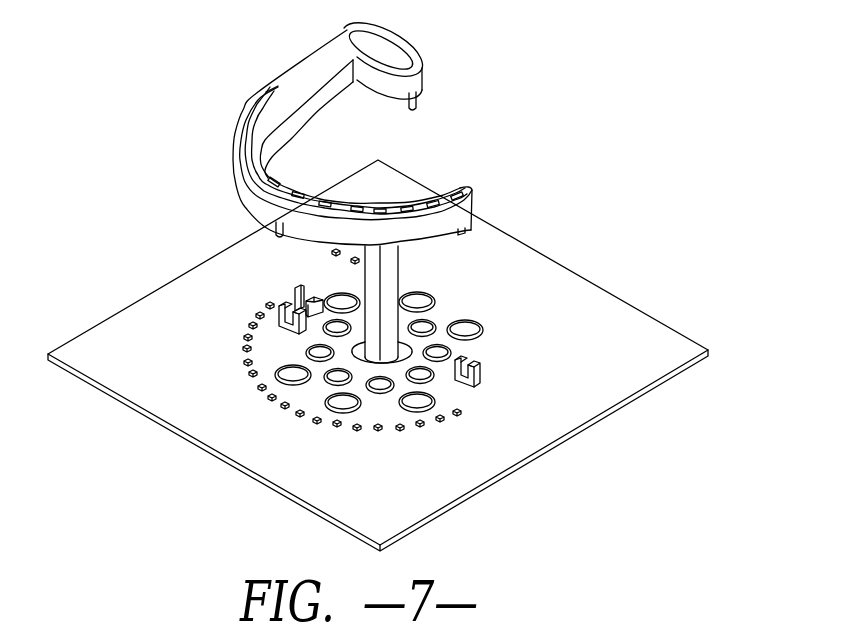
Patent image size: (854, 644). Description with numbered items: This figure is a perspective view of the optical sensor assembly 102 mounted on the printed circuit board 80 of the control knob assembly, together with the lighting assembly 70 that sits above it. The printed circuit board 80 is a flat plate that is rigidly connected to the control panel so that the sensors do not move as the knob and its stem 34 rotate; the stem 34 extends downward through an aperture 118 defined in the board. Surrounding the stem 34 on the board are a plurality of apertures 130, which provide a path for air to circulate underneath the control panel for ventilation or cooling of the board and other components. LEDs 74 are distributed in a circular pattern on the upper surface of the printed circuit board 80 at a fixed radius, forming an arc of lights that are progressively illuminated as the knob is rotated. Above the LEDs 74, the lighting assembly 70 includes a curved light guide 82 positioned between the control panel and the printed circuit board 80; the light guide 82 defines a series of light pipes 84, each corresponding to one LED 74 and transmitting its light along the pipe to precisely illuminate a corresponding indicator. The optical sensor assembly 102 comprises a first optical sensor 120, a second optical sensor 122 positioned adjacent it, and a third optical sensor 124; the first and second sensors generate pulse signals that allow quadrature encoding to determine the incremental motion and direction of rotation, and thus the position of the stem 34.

The lighting assembly 70 is at (160, 114).
The light guide 82 is at (310, 68).
The light pipes 84 is at (421, 200).
The stem 34 is at (392, 270).
The printed circuit board 80 is at (650, 343).
The apertures 130 is at (465, 326).
The third optical sensor 124 is at (479, 365).
The LEDs 74 is at (418, 425).
The aperture 118 is at (252, 347).
The second optical sensor 122 is at (280, 315).
The first optical sensor 120 is at (299, 288).
The optical sensor assembly 102 is at (266, 287).